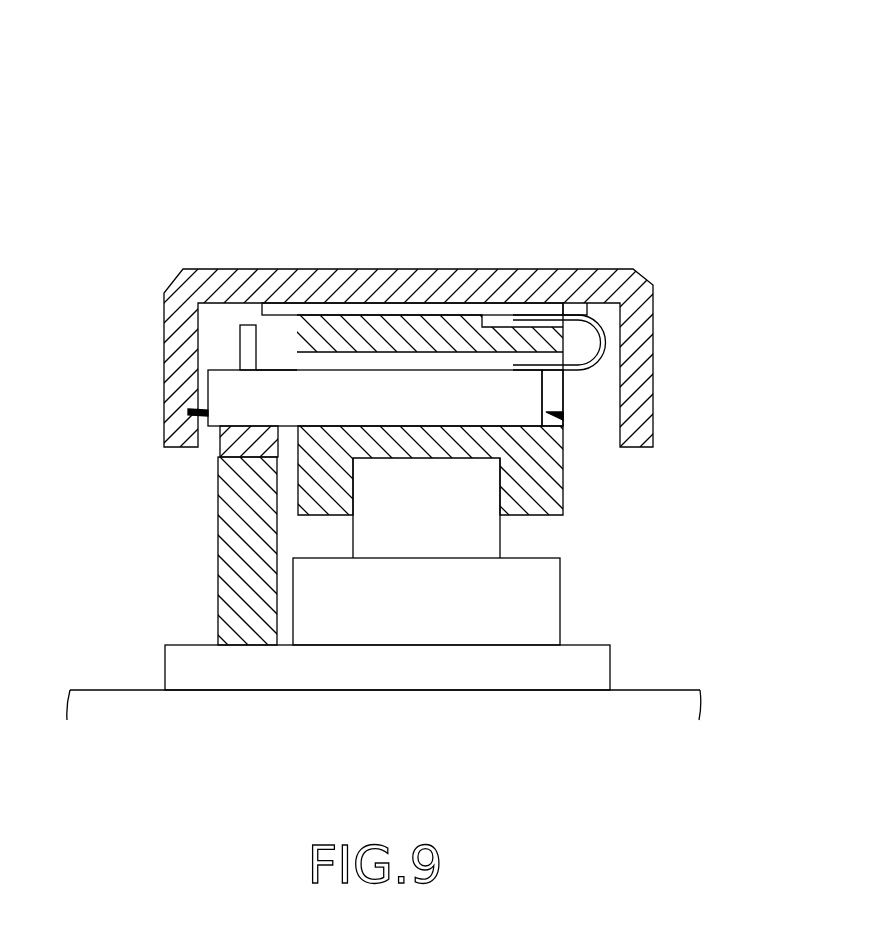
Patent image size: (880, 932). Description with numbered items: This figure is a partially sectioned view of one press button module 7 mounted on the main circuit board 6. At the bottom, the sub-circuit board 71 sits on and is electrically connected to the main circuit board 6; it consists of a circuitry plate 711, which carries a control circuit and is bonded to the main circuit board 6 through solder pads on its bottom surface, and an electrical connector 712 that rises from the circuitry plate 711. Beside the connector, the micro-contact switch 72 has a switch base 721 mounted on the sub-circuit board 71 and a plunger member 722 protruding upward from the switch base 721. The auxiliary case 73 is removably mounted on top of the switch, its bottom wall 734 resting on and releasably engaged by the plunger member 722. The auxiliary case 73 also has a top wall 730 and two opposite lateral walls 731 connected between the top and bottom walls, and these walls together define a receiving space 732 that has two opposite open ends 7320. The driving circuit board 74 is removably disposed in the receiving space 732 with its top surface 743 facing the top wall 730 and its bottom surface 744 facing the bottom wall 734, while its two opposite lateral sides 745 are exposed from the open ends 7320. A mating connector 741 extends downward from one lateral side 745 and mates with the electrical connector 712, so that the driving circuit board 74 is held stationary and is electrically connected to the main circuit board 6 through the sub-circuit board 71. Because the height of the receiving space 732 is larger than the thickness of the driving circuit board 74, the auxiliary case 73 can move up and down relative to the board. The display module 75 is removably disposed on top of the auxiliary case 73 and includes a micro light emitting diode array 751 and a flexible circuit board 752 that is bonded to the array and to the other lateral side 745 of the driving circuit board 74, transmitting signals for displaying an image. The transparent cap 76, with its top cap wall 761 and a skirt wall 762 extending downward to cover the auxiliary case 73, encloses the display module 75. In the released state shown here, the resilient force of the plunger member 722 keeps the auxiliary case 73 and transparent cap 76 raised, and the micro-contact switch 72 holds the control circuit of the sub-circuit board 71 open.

The press button module 7 is at (126, 98).
The main circuit board 6 is at (250, 700).
The sub-circuit board 71 is at (80, 570).
The circuitry plate 711 is at (225, 668).
The electrical connector 712 is at (240, 568).
The micro-contact switch 72 is at (680, 525).
The switch base 721 is at (562, 592).
The plunger member 722 is at (506, 525).
The auxiliary case 73 is at (740, 337).
The top wall 730 is at (401, 345).
The lateral walls 731 is at (555, 387).
The receiving space 732 is at (552, 362).
The open ends 7320 is at (308, 362).
The bottom wall 734 is at (540, 488).
The driving circuit board 74 is at (230, 383).
The mating connector 741 is at (245, 355).
The top surface 743 is at (271, 352).
The bottom surface 744 is at (267, 440).
The lateral sides 745 is at (190, 412).
The display module 75 is at (477, 192).
The micro light emitting diode array 751 is at (466, 310).
The flexible circuit board 752 is at (591, 303).
The transparent cap 76 is at (225, 210).
The top cap wall 761 is at (229, 282).
The skirt wall 762 is at (178, 332).